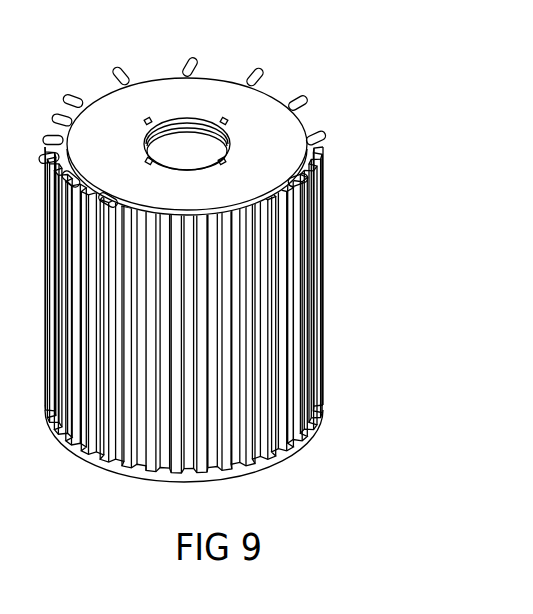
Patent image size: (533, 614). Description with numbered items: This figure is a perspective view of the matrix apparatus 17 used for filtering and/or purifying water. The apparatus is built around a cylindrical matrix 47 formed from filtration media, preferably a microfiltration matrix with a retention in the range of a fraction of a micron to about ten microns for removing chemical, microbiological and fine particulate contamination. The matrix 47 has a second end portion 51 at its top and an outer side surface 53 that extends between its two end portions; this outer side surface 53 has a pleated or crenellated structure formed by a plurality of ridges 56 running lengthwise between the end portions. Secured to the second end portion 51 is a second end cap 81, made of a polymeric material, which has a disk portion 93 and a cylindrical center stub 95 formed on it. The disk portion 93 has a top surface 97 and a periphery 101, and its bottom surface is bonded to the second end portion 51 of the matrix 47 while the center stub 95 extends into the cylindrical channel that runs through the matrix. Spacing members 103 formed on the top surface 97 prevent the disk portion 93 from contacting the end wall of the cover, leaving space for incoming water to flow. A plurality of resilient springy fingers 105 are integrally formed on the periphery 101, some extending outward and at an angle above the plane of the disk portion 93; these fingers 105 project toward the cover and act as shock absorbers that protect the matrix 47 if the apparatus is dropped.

The matrix apparatus 17 is at (324, 68).
The cylindrical matrix 47 is at (88, 275).
The second end portion 51 is at (0, 453).
The outer side surface 53 is at (298, 287).
The ridges 56 is at (298, 407).
The second end cap 81 is at (115, 143).
The disk portion 93 is at (279, 154).
The cylindrical center stub 95 is at (181, 130).
The top surface 97 is at (198, 198).
The periphery 101 is at (110, 90).
The spacing members 103 is at (226, 122).
The resilient springy fingers 105 is at (188, 63).